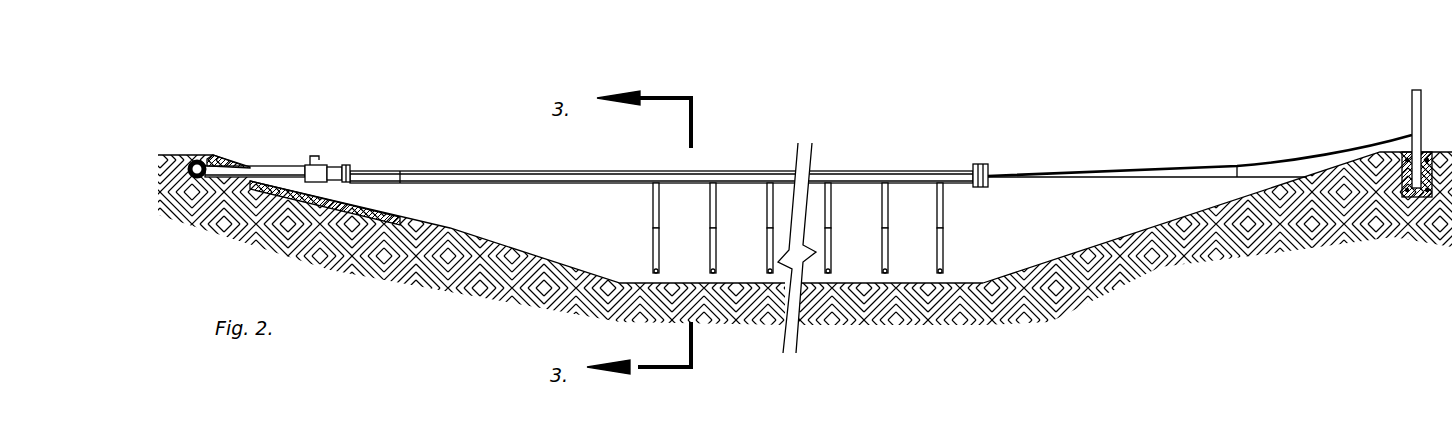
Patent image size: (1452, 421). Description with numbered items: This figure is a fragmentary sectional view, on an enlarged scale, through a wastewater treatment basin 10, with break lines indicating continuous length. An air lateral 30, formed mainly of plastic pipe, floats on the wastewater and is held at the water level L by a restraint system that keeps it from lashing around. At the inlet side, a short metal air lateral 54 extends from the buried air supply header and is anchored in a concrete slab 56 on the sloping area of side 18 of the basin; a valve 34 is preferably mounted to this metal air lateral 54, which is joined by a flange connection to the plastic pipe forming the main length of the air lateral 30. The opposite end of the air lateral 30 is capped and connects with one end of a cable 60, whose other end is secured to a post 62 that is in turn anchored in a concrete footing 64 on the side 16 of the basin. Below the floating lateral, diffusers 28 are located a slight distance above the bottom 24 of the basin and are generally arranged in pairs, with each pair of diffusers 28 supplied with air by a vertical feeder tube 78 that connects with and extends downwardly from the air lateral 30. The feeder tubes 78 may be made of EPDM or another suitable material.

The treatment basin 10 is at (1043, 128).
The side of the basin 16 is at (1391, 148).
The side 18 is at (209, 157).
The bottom of the basin 24 is at (673, 284).
The diffusers 28 is at (653, 272).
The air lateral 30 is at (497, 172).
The valve 34 is at (320, 168).
The metal air lateral 54 is at (250, 168).
The concrete slab 56 is at (342, 205).
The cable 60 is at (1178, 165).
The post 62 is at (1413, 92).
The concrete footing 64 is at (1427, 152).
The vertical feeder tube 78 is at (652, 226).
The water level L is at (1238, 163).